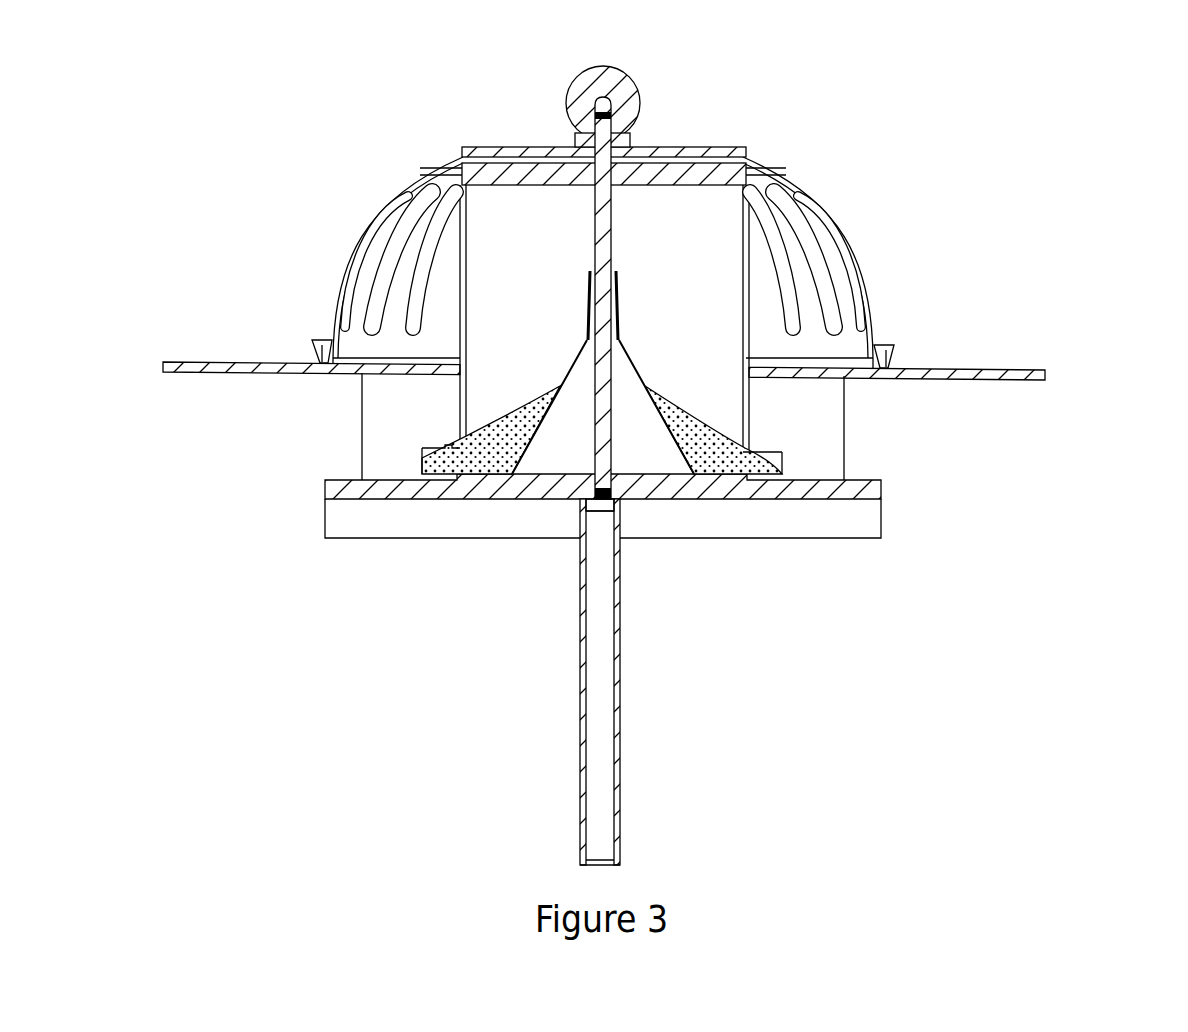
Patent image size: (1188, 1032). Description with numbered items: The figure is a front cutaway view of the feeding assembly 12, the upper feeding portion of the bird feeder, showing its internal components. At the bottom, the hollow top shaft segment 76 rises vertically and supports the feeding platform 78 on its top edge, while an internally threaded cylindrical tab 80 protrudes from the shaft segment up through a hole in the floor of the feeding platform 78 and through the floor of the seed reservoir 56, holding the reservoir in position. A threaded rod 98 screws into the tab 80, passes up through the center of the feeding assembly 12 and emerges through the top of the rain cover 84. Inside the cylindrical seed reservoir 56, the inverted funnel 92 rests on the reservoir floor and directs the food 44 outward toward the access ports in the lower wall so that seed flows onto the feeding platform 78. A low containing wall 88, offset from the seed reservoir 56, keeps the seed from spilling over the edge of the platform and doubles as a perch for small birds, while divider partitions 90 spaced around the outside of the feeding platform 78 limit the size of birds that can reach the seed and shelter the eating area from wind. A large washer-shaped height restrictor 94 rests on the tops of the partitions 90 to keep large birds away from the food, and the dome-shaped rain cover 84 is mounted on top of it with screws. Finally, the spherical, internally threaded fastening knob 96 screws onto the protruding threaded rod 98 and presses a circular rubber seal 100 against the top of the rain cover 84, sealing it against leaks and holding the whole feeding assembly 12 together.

The feeding assembly 12 is at (940, 634).
The food 44 is at (710, 383).
The seed reservoir 56 is at (480, 258).
The top shaft segment 76 is at (560, 630).
The feeding platform 78 is at (303, 492).
The internally threaded cylindrical tab 80 is at (637, 511).
The rain cover 84 is at (878, 266).
The low containing wall 88 is at (398, 441).
The divider tabs or partitions 90 is at (820, 422).
The inverted funnel 92 is at (568, 325).
The height restrictor 94 is at (991, 350).
The fastening knob 96 is at (663, 87).
The threaded rod 98 is at (634, 205).
The rubber seal 100 is at (557, 123).